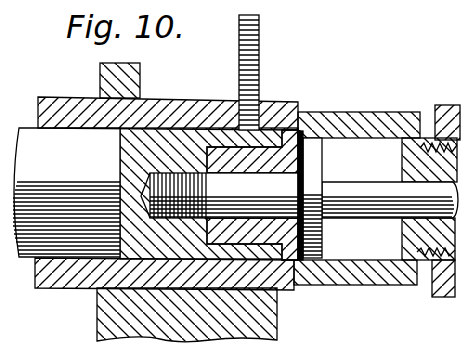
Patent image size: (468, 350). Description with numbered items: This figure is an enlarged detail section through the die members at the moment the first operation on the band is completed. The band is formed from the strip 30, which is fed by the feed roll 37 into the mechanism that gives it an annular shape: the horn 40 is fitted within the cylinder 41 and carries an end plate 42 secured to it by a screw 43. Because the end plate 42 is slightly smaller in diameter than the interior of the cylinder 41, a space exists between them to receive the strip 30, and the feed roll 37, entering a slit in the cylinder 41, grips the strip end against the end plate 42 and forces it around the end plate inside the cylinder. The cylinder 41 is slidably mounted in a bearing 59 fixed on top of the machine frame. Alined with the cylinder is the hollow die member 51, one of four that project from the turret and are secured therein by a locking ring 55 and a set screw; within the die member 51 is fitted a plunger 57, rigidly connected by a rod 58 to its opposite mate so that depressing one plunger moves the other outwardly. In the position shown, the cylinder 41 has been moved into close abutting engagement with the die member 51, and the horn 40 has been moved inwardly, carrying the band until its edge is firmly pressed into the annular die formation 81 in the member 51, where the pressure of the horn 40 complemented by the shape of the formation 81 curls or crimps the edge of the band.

The strip 30 is at (290, 266).
The feed roll 37 is at (259, 28).
The horn 40 is at (66, 192).
The cylinder 41 is at (160, 110).
The end plate 42 is at (285, 132).
The screw 43 is at (219, 195).
The die member 51 is at (352, 268).
The locking ring 55 is at (438, 106).
The plunger 57 is at (313, 162).
The rod 58 is at (353, 200).
The bearing 59 is at (100, 72).
The annular die formation 81 is at (305, 135).